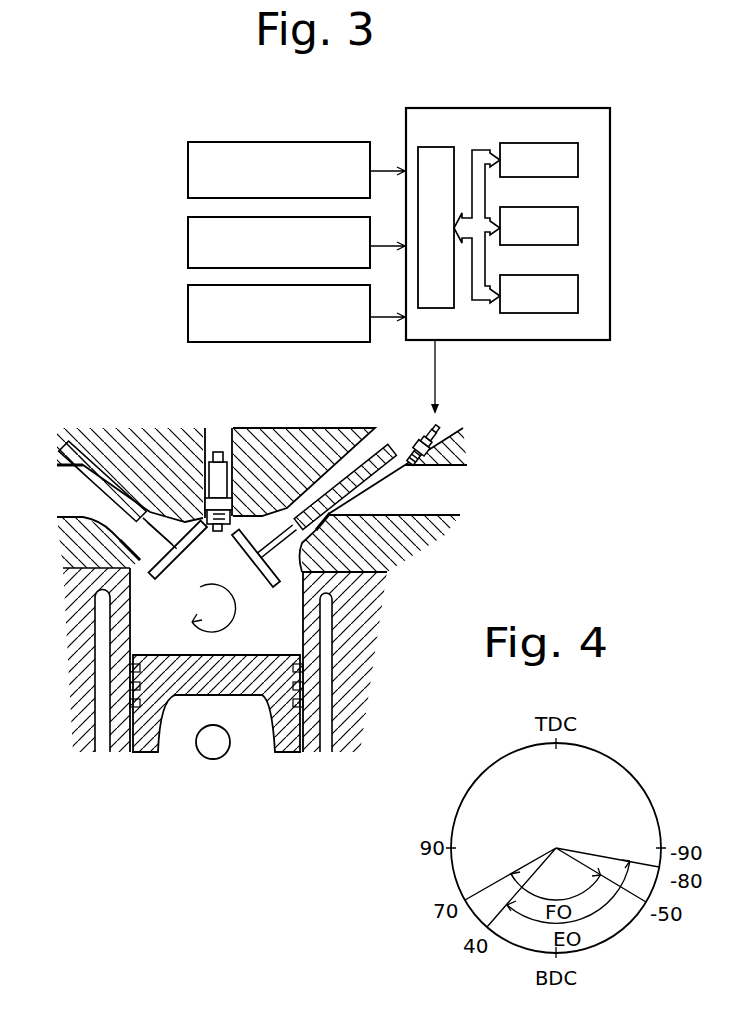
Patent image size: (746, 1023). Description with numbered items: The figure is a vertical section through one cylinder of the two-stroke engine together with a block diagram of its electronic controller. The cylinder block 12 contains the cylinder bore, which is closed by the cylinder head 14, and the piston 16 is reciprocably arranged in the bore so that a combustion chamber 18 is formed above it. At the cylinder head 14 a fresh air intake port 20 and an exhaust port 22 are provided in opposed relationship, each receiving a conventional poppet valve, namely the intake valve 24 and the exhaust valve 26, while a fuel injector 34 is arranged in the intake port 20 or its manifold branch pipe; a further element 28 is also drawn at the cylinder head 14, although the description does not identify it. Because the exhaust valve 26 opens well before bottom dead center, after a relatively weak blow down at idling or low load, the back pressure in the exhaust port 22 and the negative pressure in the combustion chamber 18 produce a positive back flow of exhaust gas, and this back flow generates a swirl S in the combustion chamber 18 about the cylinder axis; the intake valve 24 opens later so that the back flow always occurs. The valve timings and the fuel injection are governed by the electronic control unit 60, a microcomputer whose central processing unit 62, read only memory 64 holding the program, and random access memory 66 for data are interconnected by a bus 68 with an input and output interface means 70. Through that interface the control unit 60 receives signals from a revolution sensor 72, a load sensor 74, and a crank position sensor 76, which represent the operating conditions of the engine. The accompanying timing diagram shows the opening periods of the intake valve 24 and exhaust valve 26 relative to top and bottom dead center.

The cylinder block 12 is at (343, 663).
The cylinder head 14 is at (352, 553).
The piston 16 is at (292, 738).
The combustion chamber 18 is at (277, 621).
The fresh air intake port 20 is at (330, 500).
The exhaust port 22 is at (79, 500).
The intake valve 24 is at (285, 522).
The exhaust valve 26 is at (157, 518).
The fuel injector 28 is at (224, 452).
The fuel injector 34 is at (447, 435).
The electronic control unit 60 is at (590, 343).
The central processing unit 62 is at (576, 143).
The read only memory 64 is at (578, 208).
The random access memory 66 is at (578, 276).
The bus 68 is at (477, 148).
The input and output interface means 70 is at (444, 146).
The revolution sensor 72 is at (188, 161).
The load sensor 74 is at (188, 236).
The crank position sensor 76 is at (188, 304).